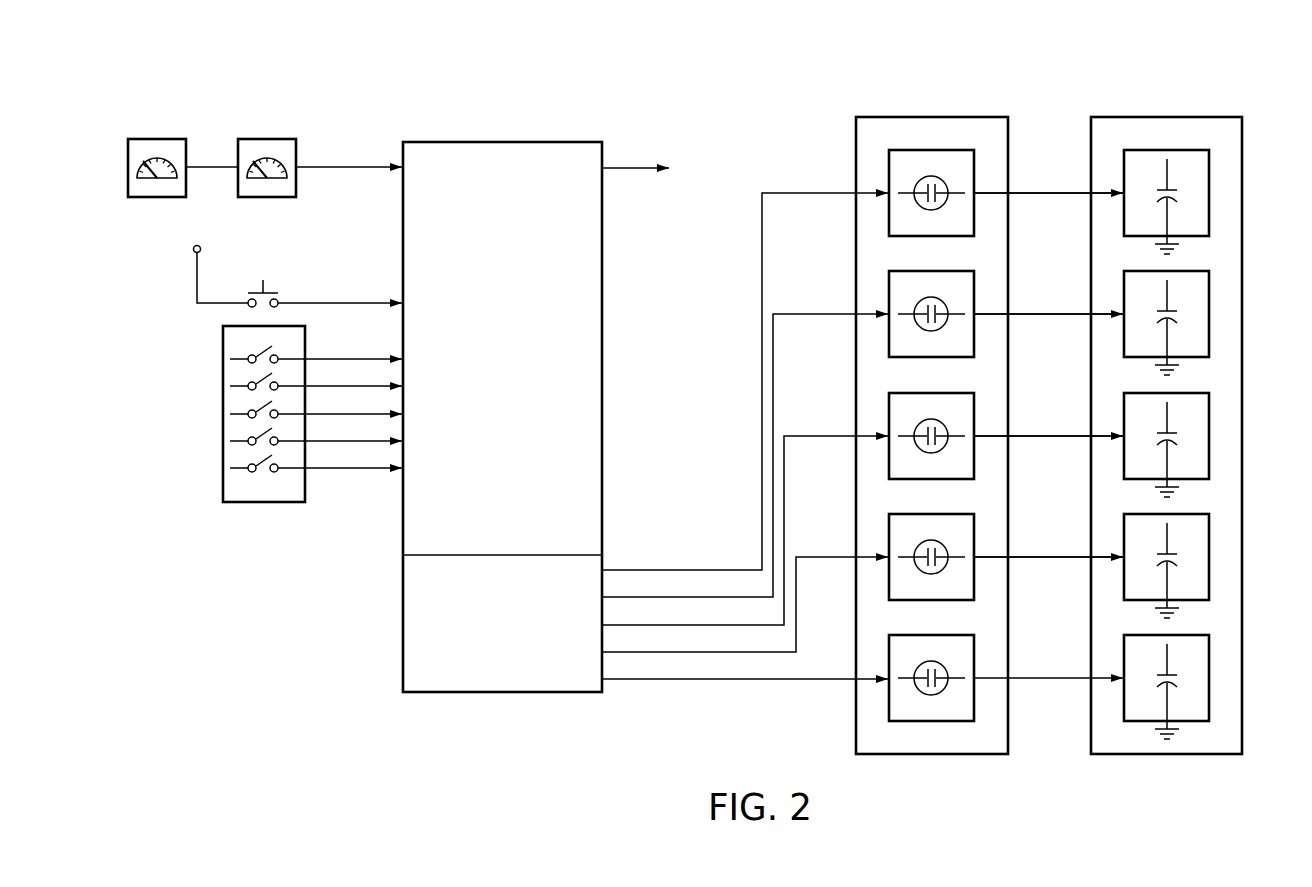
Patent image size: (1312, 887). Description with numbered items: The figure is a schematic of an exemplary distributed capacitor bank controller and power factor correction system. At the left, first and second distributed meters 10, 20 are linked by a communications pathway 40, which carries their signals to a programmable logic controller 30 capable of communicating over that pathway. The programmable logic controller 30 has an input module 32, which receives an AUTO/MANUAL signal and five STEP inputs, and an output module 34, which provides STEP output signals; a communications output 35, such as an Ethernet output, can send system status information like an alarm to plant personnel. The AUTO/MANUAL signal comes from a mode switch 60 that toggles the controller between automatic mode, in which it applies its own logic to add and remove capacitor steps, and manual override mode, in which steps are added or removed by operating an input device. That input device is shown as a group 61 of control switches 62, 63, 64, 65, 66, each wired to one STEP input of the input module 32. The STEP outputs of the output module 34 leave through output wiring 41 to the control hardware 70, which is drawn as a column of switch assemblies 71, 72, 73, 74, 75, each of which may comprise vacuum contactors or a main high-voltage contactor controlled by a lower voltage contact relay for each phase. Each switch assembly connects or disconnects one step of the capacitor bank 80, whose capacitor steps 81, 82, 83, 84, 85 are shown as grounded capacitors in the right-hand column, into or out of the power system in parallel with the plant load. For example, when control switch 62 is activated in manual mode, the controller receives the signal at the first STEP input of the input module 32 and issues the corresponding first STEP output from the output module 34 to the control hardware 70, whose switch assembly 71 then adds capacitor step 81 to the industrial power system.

The first distributed meter 10 is at (158, 139).
The second distributed meter 20 is at (267, 139).
The communications pathway 40 is at (211, 166).
The programmable logic controller 30 is at (490, 128).
The input module 32 is at (426, 525).
The output module 34 is at (426, 623).
The communications output 35 is at (604, 166).
The output wiring 41 is at (640, 708).
The mode switch 60 is at (276, 294).
The manual step switch bank 61 is at (258, 503).
The control switch 62 is at (241, 358).
The control switch 63 is at (241, 385).
The control switch 64 is at (241, 413).
The control switch 65 is at (241, 440).
The control switch 66 is at (241, 467).
The control hardware 70 is at (913, 104).
The switch assembly 71 is at (974, 163).
The switch assembly 72 is at (974, 284).
The switch assembly 73 is at (974, 406).
The switch assembly 74 is at (974, 527).
The switch assembly 75 is at (974, 648).
The capacitor bank 80 is at (1153, 104).
The capacitor step 81 is at (1209, 190).
The capacitor step 82 is at (1209, 311).
The capacitor step 83 is at (1209, 433).
The capacitor step 84 is at (1209, 554).
The capacitor step 85 is at (1209, 675).